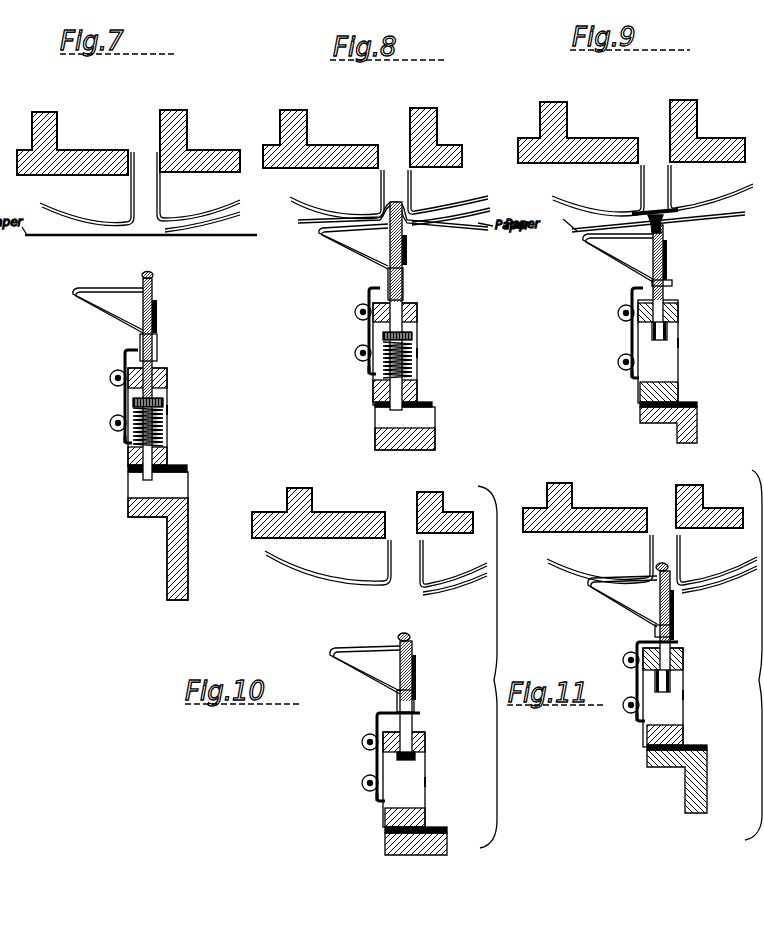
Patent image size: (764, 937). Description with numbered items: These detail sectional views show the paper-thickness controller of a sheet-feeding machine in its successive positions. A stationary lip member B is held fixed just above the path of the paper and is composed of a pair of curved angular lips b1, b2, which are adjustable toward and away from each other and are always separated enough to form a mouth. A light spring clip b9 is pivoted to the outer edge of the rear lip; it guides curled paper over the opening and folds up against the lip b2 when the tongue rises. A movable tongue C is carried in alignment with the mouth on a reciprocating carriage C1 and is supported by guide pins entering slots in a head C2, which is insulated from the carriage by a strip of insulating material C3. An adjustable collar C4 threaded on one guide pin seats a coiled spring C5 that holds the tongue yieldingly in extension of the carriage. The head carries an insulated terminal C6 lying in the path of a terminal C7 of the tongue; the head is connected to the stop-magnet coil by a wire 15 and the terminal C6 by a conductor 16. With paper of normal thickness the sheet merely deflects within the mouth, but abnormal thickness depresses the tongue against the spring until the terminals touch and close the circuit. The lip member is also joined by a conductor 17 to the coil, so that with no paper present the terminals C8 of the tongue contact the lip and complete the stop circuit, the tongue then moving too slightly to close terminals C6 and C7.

In FIG. 7, the lip member B is at (128, 142).
In FIG. 8, the lip member B is at (362, 138).
In FIG. 9, the lip member B is at (631, 131).
In FIG. 10, the lip member B is at (362, 511).
In FIG. 11, the lip member B is at (633, 505).
In FIG. 7, the conductor 17 is at (133, 150).
In FIG. 8, the conductor 17 is at (383, 145).
In FIG. 9, the conductor 17 is at (640, 134).
In FIG. 10, the conductor 17 is at (317, 493).
In FIG. 11, the conductor 17 is at (577, 488).
In FIG. 7, the curved angular lip b1 is at (82, 219).
In FIG. 8, the curved angular lip b1 is at (338, 216).
In FIG. 9, the curved angular lip b1 is at (588, 211).
In FIG. 10, the curved angular lip b1 is at (338, 581).
In FIG. 11, the curved angular lip b1 is at (593, 571).
In FIG. 7, the curved angular lip b2 is at (198, 216).
In FIG. 8, the curved angular lip b2 is at (455, 213).
In FIG. 9, the curved angular lip b2 is at (716, 208).
In FIG. 10, the curved angular lip b2 is at (447, 579).
In FIG. 11, the curved angular lip b2 is at (745, 572).
In FIG. 7, the clip b9 is at (240, 214).
In FIG. 8, the clip b9 is at (486, 207).
In FIG. 9, the clip b9 is at (718, 214).
In FIG. 10, the clip b9 is at (473, 586).
In FIG. 11, the clip b9 is at (714, 580).
In FIG. 7, the tongue C is at (153, 278).
In FIG. 8, the tongue C is at (403, 253).
In FIG. 9, the tongue C is at (664, 226).
In FIG. 10, the tongue C is at (413, 637).
In FIG. 11, the tongue C is at (668, 567).
In FIG. 7, the carriage C1 is at (159, 340).
In FIG. 8, the carriage C1 is at (407, 288).
In FIG. 9, the carriage C1 is at (667, 331).
In FIG. 10, the carriage C1 is at (414, 690).
In FIG. 11, the carriage C1 is at (673, 681).
In FIG. 7, the head C2 is at (167, 368).
In FIG. 8, the head C2 is at (417, 305).
In FIG. 9, the head C2 is at (678, 309).
In FIG. 10, the head C2 is at (425, 743).
In FIG. 11, the head C2 is at (683, 656).
In FIG. 7, the strip of insulating material C3 is at (187, 467).
In FIG. 8, the strip of insulating material C3 is at (432, 402).
In FIG. 9, the strip of insulating material C3 is at (697, 402).
In FIG. 10, the strip of insulating material C3 is at (447, 827).
In FIG. 11, the strip of insulating material C3 is at (707, 746).
In FIG. 7, the adjustable collar C4 is at (163, 402).
In FIG. 8, the adjustable collar C4 is at (415, 332).
In FIG. 7, the coiled spring C5 is at (163, 432).
In FIG. 8, the coiled spring C5 is at (417, 370).
In FIG. 7, the insulated terminal C6 is at (123, 358).
In FIG. 8, the insulated terminal C6 is at (368, 298).
In FIG. 9, the insulated terminal C6 is at (630, 299).
In FIG. 10, the insulated terminal C6 is at (375, 723).
In FIG. 11, the insulated terminal C6 is at (640, 681).
In FIG. 7, the terminal of the tongue C7 is at (143, 338).
In FIG. 8, the terminal of the tongue C7 is at (390, 272).
In FIG. 9, the terminal of the tongue C7 is at (672, 283).
In FIG. 10, the terminal of the tongue C7 is at (397, 700).
In FIG. 11, the terminal of the tongue C7 is at (670, 626).
In FIG. 7, the terminals of the tongue C8 is at (80, 288).
In FIG. 8, the terminals of the tongue C8 is at (328, 240).
In FIG. 9, the terminals of the tongue C8 is at (594, 254).
In FIG. 10, the terminals of the tongue C8 is at (356, 648).
In FIG. 11, the terminals of the tongue C8 is at (593, 588).
In FIG. 7, the wire 15 is at (167, 410).
In FIG. 8, the wire 15 is at (419, 354).
In FIG. 9, the wire 15 is at (679, 343).
In FIG. 10, the wire 15 is at (427, 784).
In FIG. 11, the wire 15 is at (684, 697).
In FIG. 7, the conductor 16 is at (114, 440).
In FIG. 8, the conductor 16 is at (368, 373).
In FIG. 9, the conductor 16 is at (630, 376).
In FIG. 10, the conductor 16 is at (373, 805).
In FIG. 11, the conductor 16 is at (632, 725).